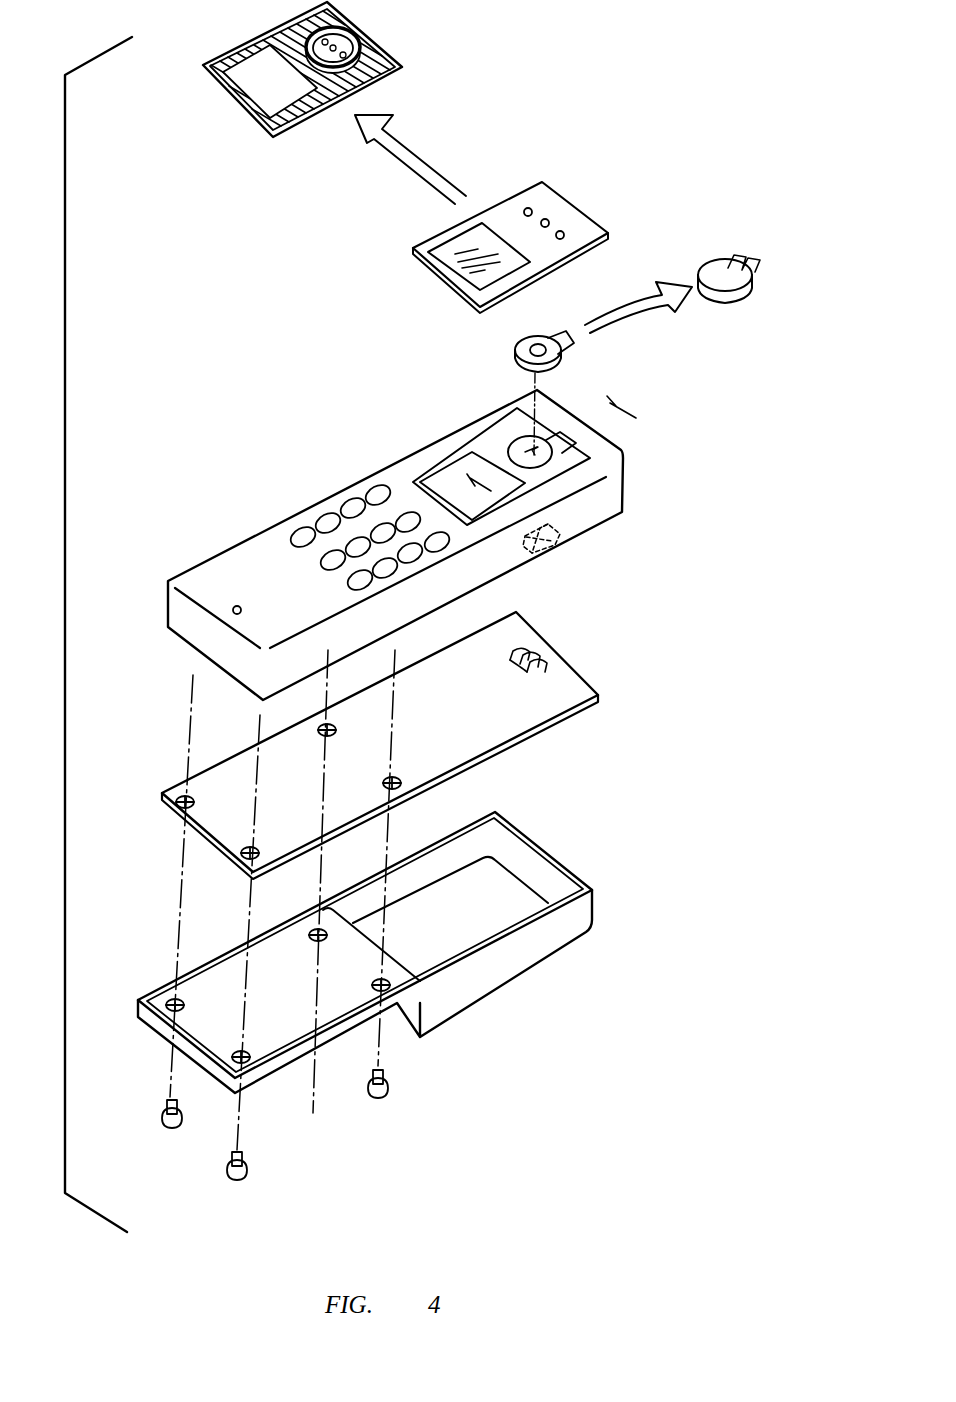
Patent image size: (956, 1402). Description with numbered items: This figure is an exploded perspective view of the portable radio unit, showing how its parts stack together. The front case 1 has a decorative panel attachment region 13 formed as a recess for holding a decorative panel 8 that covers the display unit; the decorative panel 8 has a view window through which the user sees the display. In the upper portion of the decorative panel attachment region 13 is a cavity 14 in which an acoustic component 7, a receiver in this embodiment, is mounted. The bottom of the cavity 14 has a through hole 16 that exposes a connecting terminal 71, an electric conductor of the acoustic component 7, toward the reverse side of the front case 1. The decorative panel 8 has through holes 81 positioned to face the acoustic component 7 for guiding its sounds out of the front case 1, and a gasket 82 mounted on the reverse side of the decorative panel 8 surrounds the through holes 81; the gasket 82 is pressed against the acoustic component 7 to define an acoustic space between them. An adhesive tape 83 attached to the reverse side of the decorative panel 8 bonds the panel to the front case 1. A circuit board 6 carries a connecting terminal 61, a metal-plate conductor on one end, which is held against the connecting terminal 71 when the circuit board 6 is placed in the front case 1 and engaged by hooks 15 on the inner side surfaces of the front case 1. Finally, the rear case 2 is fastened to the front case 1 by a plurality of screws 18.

The front case 1 is at (386, 534).
The rear case 2 is at (568, 958).
The circuit board 6 is at (359, 745).
The acoustic component 7 is at (520, 356).
The decorative panel 8 is at (491, 239).
The decorative panel attachment region 13 is at (425, 468).
The cavity 14 is at (508, 450).
The hooks 15 is at (552, 548).
The through hole 16 is at (537, 447).
The screws 18 is at (175, 1128).
The connecting terminal 61 is at (532, 655).
The connecting terminal 71 is at (745, 258).
The through holes 81 is at (548, 221).
The gasket 82 is at (378, 30).
The adhesive tape 83 is at (203, 72).